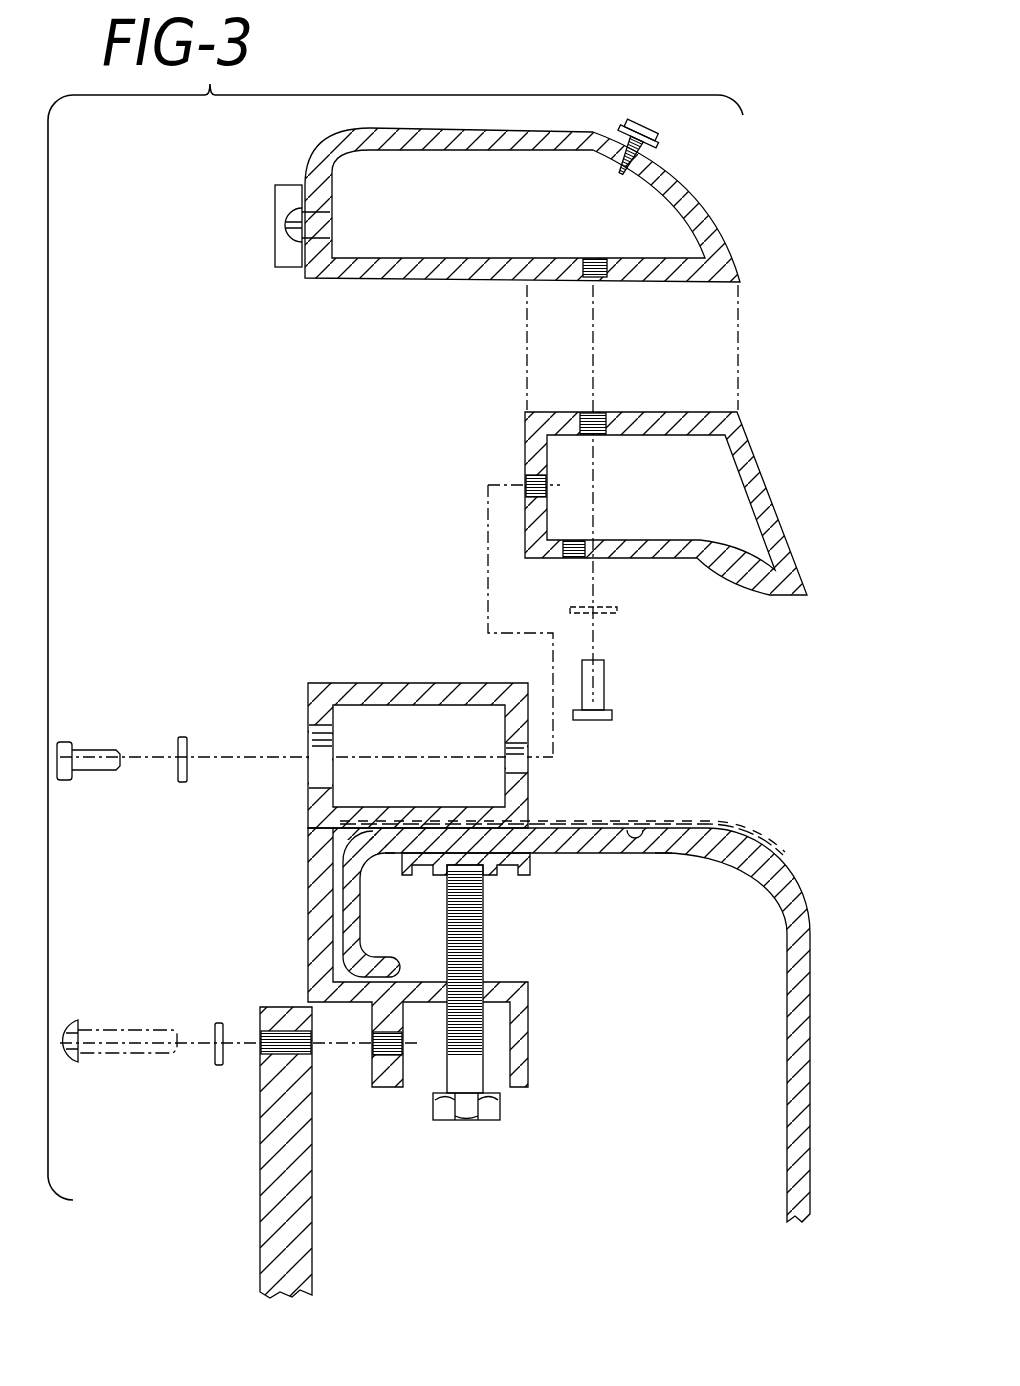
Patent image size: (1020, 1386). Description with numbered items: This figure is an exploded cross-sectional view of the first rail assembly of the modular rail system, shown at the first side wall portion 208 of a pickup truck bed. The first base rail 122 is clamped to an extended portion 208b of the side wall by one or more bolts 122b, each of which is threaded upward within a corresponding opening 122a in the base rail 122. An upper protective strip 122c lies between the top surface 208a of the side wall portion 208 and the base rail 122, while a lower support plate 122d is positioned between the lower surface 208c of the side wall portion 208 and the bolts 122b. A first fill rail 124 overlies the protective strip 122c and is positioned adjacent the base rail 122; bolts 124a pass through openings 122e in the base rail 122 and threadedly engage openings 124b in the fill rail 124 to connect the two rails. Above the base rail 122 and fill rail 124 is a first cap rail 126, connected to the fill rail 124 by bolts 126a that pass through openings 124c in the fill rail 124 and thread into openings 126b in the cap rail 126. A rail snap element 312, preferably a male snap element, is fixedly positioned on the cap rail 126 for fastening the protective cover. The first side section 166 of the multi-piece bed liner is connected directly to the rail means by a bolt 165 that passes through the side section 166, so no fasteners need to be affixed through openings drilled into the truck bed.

The first base rail 122 is at (308, 918).
The opening 122a is at (478, 1000).
The bolt 122b is at (466, 1122).
The upper protective strip 122c is at (735, 850).
The lower support plate 122d is at (528, 872).
The opening 122e is at (522, 767).
The first fill rail 124 is at (752, 478).
The bolt 124a is at (105, 752).
The opening 124b is at (526, 484).
The opening 124c is at (607, 412).
The first cap rail 126 is at (695, 190).
The bolt 126a is at (606, 690).
The opening 126b is at (605, 258).
The bolt 165 is at (125, 1032).
The first side section 166 is at (313, 1205).
The first side wall portion 208 is at (810, 1025).
The top surface 208a is at (640, 830).
The extended portion 208b is at (677, 855).
The lower surface 208c is at (663, 857).
The rail snap element 312 is at (650, 130).